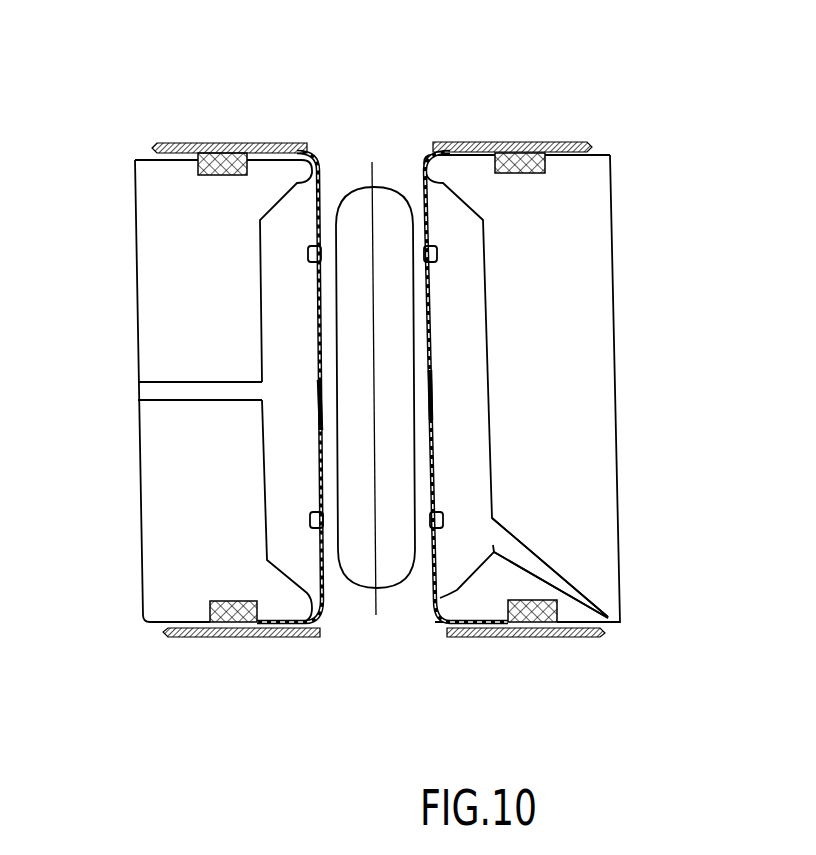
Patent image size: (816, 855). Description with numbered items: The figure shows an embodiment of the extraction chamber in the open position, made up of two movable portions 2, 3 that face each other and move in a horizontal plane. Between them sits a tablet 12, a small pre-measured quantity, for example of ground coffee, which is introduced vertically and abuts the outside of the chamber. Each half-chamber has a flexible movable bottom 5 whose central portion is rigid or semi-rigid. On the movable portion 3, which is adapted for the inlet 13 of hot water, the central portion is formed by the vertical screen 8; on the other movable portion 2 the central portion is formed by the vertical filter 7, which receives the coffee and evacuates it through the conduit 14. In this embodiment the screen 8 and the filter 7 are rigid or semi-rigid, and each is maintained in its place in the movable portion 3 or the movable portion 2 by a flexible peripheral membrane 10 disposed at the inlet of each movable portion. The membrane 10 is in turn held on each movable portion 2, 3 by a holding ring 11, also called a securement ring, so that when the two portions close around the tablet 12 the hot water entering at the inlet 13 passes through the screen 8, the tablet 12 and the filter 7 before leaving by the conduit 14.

The movable portion 2 is at (568, 200).
The movable portion 3 is at (160, 198).
The movable bottom 5 is at (432, 322).
The filter 7 is at (432, 395).
The screen 8 is at (318, 408).
The flexible peripheral membrane 10 is at (323, 183).
The holding ring 11 is at (230, 148).
The tablet 12 is at (385, 230).
The inlet 13 is at (153, 390).
The conduit 14 is at (583, 585).